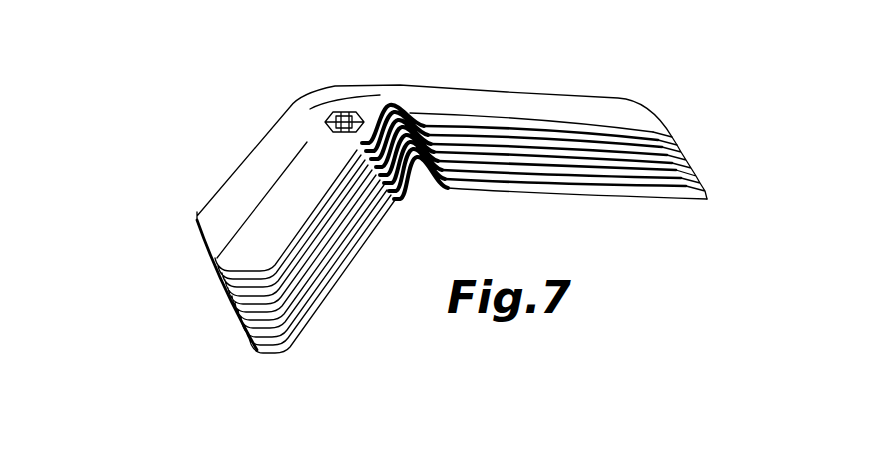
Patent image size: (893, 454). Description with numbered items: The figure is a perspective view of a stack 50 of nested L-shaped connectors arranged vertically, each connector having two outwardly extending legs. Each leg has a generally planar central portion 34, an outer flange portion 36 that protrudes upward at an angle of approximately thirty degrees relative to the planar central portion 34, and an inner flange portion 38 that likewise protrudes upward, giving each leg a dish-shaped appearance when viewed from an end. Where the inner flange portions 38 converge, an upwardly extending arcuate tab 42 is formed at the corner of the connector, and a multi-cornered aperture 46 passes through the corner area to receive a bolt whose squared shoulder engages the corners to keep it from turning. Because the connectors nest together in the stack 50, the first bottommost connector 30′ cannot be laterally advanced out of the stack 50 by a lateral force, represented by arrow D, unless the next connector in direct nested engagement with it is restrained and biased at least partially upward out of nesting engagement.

The stack 50 is at (133, 45).
The planar central portion 34 is at (262, 261).
The outer flange portion 36 is at (232, 197).
The inner flange portion 38 is at (337, 188).
The arcuate tab 42 is at (389, 102).
The multi-cornered aperture 46 is at (337, 112).
The first bottommost connector 30′ is at (705, 197).
The lateral force arrow D is at (240, 336).